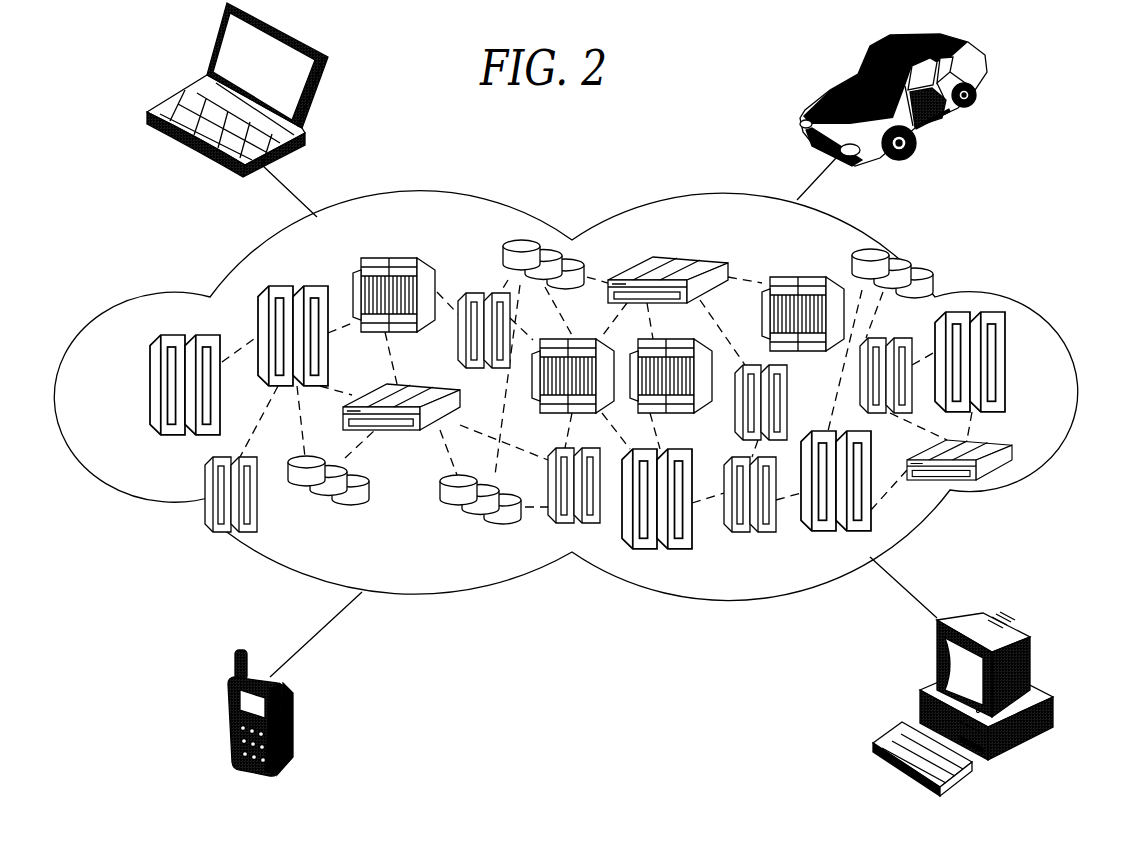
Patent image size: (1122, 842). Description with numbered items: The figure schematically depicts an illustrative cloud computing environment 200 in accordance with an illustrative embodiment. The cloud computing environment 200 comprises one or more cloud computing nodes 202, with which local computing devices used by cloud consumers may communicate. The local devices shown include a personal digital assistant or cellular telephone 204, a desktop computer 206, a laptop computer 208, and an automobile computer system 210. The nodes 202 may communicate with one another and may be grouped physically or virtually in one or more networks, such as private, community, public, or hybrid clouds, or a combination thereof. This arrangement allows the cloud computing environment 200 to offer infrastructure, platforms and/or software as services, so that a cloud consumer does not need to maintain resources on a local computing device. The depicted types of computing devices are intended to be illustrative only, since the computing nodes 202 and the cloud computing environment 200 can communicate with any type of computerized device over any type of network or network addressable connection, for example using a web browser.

The cloud computing environment 200 is at (1032, 314).
The cloud computing nodes 202 is at (993, 476).
The cellular telephone 204 is at (292, 687).
The desktop computer 206 is at (928, 684).
The laptop computer 208 is at (185, 86).
The automobile computer system 210 is at (812, 96).